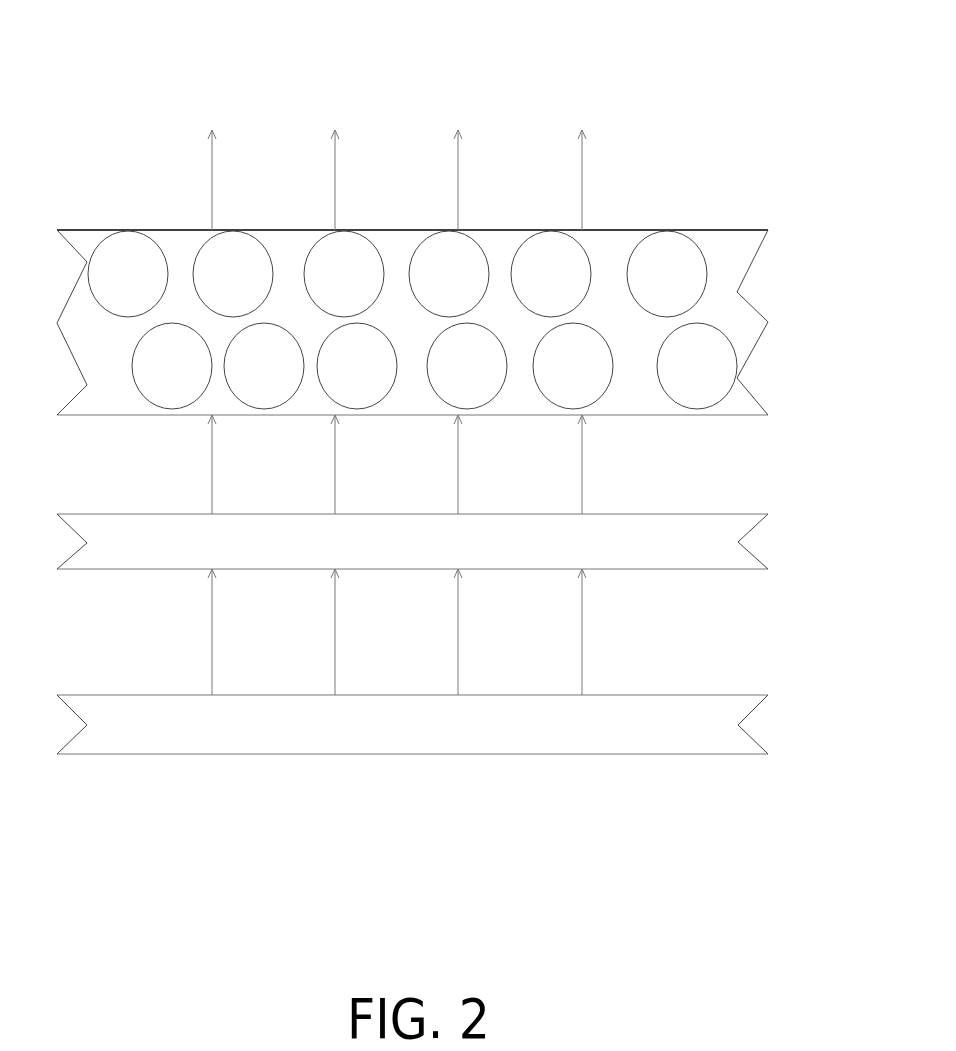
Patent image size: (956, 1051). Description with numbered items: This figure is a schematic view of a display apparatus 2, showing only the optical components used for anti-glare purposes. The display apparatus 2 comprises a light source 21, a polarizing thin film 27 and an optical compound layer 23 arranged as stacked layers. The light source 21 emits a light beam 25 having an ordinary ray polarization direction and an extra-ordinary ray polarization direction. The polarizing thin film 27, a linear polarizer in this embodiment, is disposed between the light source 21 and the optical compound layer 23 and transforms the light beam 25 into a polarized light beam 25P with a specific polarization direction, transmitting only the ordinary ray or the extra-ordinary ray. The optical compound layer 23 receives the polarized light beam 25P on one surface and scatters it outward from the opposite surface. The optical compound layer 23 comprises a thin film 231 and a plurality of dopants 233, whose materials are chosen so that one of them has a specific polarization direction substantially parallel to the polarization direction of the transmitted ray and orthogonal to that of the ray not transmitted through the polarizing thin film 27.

The display apparatus 2 is at (512, 78).
The light source 21 is at (730, 705).
The optical compound layer 23 is at (172, 220).
The thin film 231 is at (730, 255).
The dopants 233 is at (665, 250).
The light beam 25 is at (206, 188).
The polarized light beam 25P is at (206, 473).
The polarizing thin film 27 is at (730, 528).